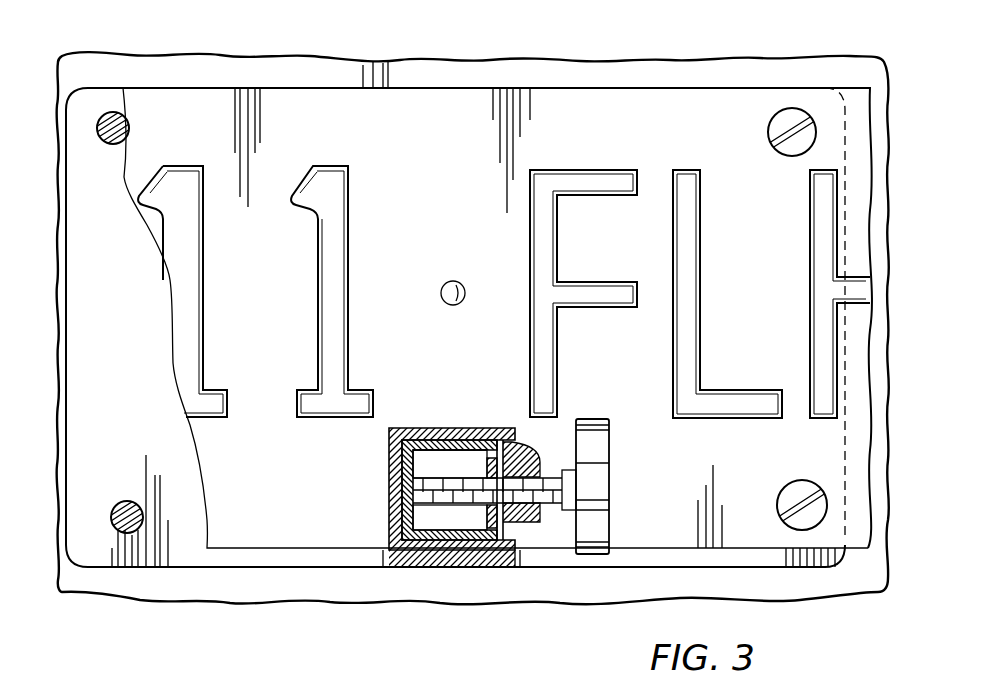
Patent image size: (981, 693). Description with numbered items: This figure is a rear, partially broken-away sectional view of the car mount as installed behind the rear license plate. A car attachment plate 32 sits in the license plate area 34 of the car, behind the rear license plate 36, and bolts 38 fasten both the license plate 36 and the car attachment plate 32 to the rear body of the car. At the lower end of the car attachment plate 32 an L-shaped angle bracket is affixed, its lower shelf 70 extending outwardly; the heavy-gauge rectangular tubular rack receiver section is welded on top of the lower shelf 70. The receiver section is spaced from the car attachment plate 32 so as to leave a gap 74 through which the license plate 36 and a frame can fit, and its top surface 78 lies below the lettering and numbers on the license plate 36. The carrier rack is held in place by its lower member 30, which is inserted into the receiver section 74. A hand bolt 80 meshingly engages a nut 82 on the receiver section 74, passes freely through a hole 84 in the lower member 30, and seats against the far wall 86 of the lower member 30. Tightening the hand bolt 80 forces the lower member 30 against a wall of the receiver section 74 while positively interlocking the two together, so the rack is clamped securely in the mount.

The lower member 30 is at (407, 498).
The car attachment plate 32 is at (190, 549).
The license plate area 34 is at (268, 72).
The rear license plate 36 is at (543, 88).
The bolts 38 is at (126, 120).
The lower shelf 70 is at (463, 560).
The gap 74 is at (396, 468).
The top surface 78 is at (461, 431).
The hand bolt 80 is at (600, 449).
The nut 82 is at (523, 520).
The hole 84 is at (491, 468).
The far wall 86 is at (421, 447).